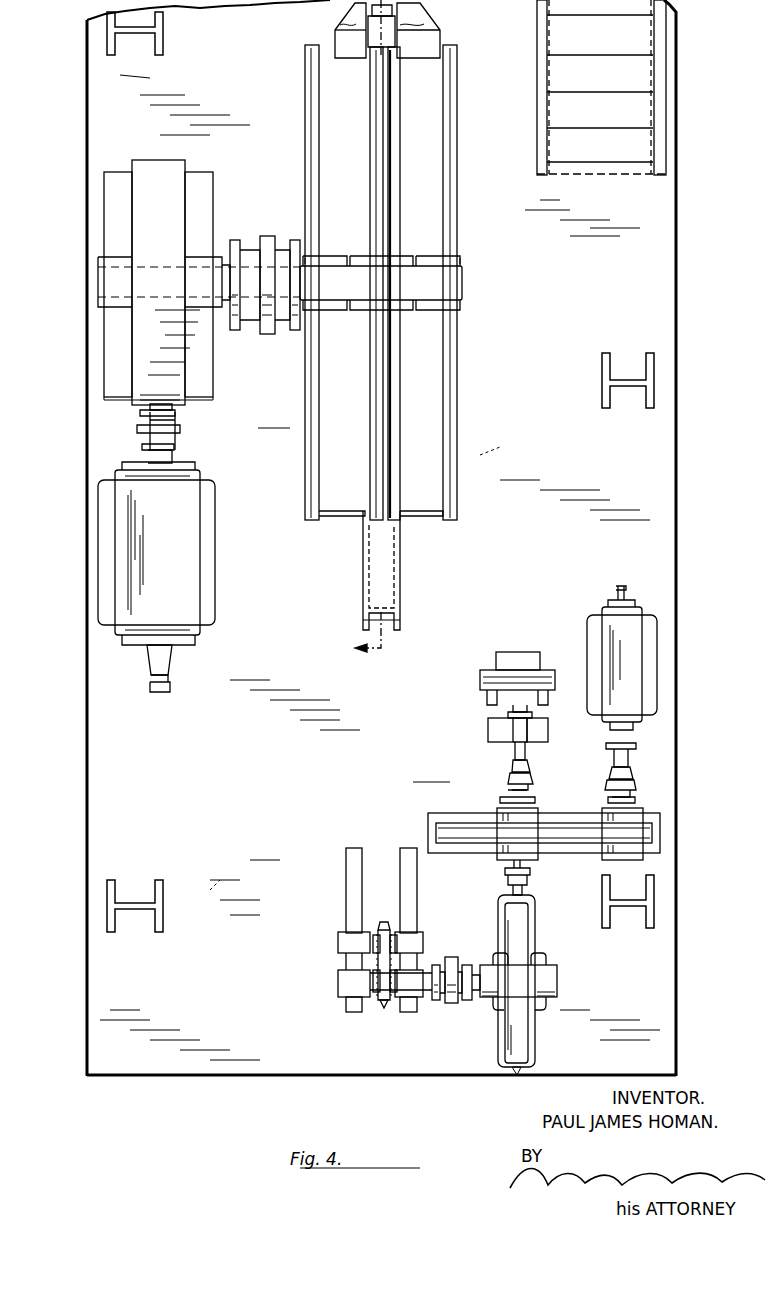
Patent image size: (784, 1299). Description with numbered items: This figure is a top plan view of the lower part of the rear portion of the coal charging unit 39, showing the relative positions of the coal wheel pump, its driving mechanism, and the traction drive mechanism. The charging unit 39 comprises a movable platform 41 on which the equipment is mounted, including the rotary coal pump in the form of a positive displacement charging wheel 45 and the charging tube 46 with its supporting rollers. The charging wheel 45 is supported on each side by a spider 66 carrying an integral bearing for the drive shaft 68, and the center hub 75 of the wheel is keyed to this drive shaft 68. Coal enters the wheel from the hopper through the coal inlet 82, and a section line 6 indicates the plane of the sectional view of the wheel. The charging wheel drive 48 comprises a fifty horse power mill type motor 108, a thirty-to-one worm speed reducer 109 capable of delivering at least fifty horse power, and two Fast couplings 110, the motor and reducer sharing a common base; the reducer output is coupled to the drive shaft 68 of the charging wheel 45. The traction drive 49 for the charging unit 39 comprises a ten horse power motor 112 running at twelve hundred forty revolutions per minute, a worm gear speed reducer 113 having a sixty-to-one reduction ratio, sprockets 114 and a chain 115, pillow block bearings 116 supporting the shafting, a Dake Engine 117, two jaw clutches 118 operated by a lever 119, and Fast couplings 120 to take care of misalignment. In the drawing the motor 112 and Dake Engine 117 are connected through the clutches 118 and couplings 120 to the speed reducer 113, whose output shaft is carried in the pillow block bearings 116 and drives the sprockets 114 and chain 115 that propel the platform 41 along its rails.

The section line 6 is at (392, 10).
The charging unit 39 is at (86, 756).
The movable platform 41 is at (381, 1025).
The charging wheel 45 is at (380, 488).
The charging tube 46 is at (368, 40).
The charging wheel drive 48 is at (274, 419).
The traction drive 49 is at (431, 773).
The spider 66 is at (458, 343).
The drive shaft 68 is at (458, 279).
The center hub 75 is at (395, 258).
The coal inlet 82 is at (372, 583).
The mill type motor 108 is at (205, 598).
The worm speed reducer 109 is at (200, 367).
The Fast couplings 110 is at (267, 240).
The motor 112 is at (590, 636).
The worm gear speed reducer 113 is at (560, 812).
The sprockets 114 is at (388, 920).
The chain 115 is at (384, 1008).
The pillow block bearings 116 is at (410, 886).
The Dake Engine 117 is at (478, 694).
The jaw clutches 118 is at (523, 782).
The lever 119 is at (500, 800).
The Fast couplings 120 is at (636, 746).